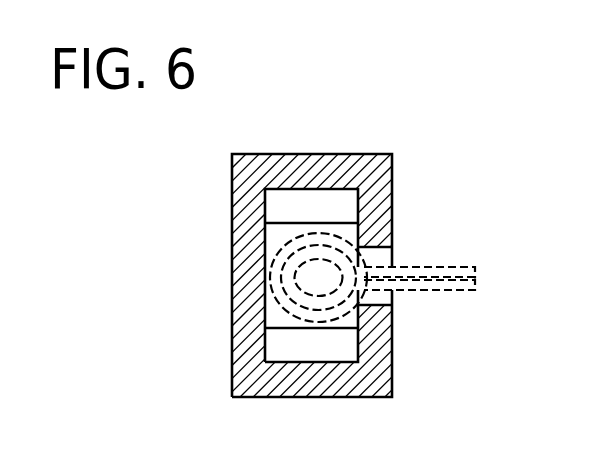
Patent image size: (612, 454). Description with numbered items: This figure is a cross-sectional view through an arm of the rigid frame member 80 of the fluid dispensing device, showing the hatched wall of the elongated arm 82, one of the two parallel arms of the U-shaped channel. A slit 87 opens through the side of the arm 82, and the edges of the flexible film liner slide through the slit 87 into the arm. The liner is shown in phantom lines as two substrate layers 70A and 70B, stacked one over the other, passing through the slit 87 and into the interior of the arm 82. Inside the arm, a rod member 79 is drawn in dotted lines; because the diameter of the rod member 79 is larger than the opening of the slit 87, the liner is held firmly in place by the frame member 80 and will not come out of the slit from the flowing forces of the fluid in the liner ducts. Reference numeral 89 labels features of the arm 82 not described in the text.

The rigid frame member 80 is at (319, 111).
The elongated arm 82 is at (298, 154).
The chamber partition 89 is at (333, 202).
The slit 87 is at (382, 252).
The rod member 79 is at (302, 273).
The substrate layer 70A is at (438, 267).
The substrate layer 70B is at (442, 289).